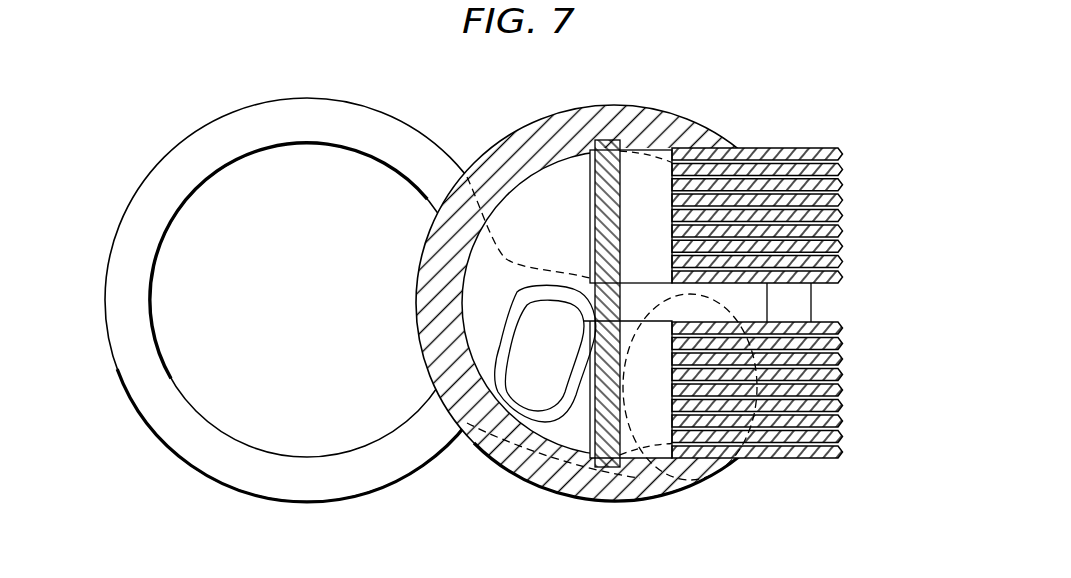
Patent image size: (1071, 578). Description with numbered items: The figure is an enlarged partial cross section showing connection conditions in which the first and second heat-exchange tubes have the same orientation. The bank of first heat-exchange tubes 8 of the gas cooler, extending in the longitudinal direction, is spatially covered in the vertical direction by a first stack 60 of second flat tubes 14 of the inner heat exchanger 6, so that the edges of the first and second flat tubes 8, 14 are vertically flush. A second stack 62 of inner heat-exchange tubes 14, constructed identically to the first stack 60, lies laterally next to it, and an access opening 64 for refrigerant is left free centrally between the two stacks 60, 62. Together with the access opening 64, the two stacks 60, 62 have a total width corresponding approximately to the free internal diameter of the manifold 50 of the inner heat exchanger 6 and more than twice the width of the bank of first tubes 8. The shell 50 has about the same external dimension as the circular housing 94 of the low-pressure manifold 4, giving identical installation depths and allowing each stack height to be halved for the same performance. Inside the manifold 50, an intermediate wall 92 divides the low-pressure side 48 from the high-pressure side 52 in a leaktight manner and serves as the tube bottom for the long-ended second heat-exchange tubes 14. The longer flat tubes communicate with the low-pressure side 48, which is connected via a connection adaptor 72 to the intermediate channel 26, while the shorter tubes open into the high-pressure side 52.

The manifold on the low-pressure side 4 is at (300, 311).
The inner heat exchanger 6 is at (711, 99).
The first heat-exchange tubes 8 is at (826, 476).
The second flat tubes 14 is at (857, 142).
The intermediate channel 26 is at (530, 390).
The low-pressure side 48 is at (536, 224).
The manifold 50 is at (544, 134).
The high-pressure side 52 is at (628, 224).
The first stack 60 is at (830, 398).
The second stack 62 is at (843, 205).
The access opening 64 is at (750, 303).
The connection adaptor 72 is at (543, 418).
The intermediate wall 92 is at (608, 140).
The housing 94 is at (286, 116).